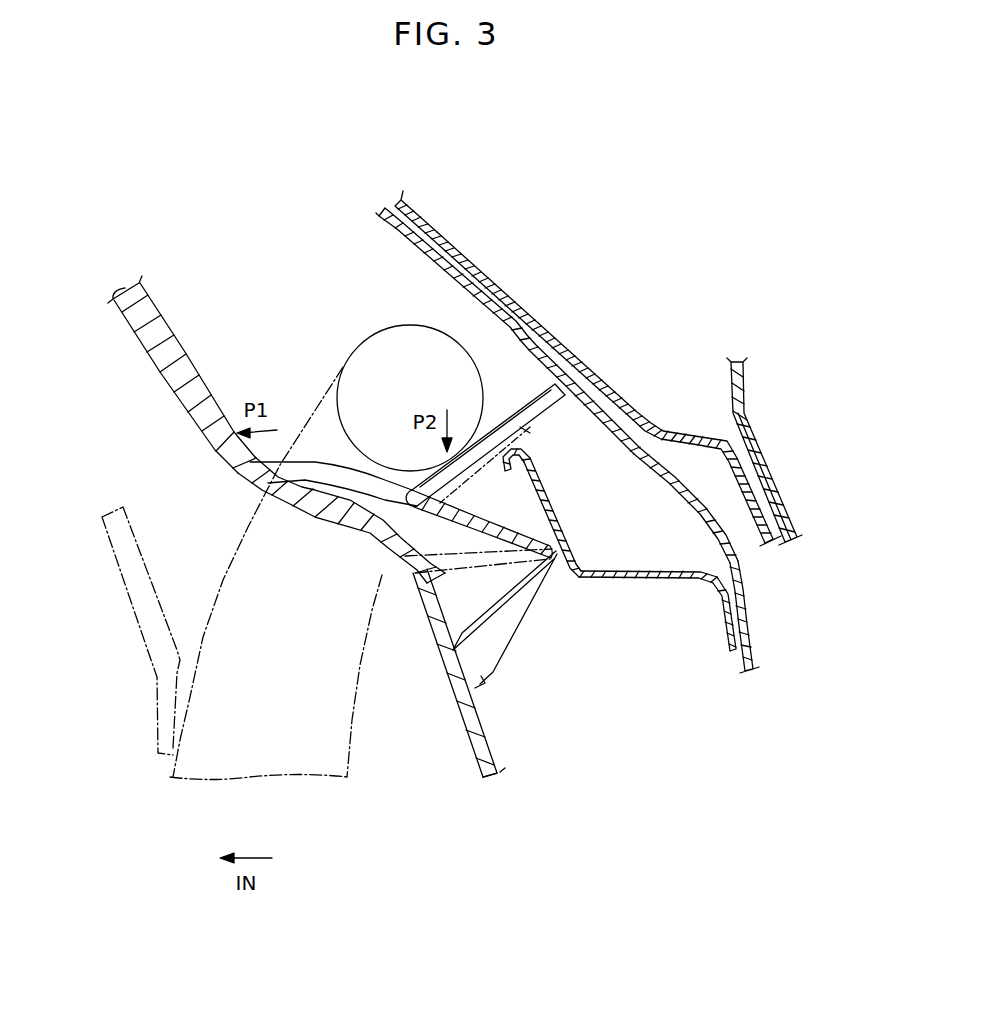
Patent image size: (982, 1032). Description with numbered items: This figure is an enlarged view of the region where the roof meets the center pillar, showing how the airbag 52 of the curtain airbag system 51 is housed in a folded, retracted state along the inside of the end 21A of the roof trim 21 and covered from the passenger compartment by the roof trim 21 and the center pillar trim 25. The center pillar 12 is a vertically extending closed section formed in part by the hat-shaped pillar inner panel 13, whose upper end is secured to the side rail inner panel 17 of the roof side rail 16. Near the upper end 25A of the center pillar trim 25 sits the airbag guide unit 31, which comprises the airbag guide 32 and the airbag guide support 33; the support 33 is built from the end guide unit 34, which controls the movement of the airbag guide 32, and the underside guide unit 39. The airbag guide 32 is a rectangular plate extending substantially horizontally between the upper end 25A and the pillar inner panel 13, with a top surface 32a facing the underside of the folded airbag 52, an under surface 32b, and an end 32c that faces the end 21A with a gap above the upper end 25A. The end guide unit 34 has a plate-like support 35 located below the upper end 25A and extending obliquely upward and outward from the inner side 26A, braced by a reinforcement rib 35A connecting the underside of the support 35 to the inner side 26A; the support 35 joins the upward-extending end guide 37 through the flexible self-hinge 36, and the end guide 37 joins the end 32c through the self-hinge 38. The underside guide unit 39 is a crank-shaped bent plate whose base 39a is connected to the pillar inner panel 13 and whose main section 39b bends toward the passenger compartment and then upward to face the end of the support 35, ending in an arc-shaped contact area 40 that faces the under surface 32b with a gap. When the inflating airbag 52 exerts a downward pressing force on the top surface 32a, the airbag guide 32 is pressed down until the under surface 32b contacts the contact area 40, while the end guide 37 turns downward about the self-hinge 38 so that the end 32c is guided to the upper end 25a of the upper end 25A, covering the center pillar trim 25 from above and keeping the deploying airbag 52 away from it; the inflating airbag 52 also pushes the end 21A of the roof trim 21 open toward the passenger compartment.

The center pillar 12 is at (737, 580).
The pillar inner panel 13 is at (752, 660).
The roof side rail 16 is at (437, 233).
The side rail inner panel 17 is at (470, 268).
The roof trim 21 is at (146, 330).
The end of roof trim 21A is at (352, 528).
The center pillar trim 25 is at (480, 763).
The upper end of center pillar trim 25A is at (430, 627).
The upper end of the upper end of center pillar trim 25a is at (410, 572).
The inner side 26A is at (455, 742).
The airbag guide unit 31 is at (585, 678).
The airbag guide 32 is at (566, 350).
The top surface 32a is at (513, 410).
The under surface 32b is at (567, 390).
The end of airbag guide 32c is at (250, 462).
The airbag guide support 33 is at (597, 650).
The end guide unit 34 is at (518, 628).
The support 35 is at (483, 620).
The reinforcement rib 35A is at (480, 683).
The self-hinge 36 is at (567, 538).
The end guide 37 is at (503, 528).
The self-hinge 38 is at (277, 478).
The underside guide unit 39 is at (613, 580).
The base 39a is at (730, 633).
The main section 39b is at (657, 571).
The contact area 40 is at (530, 455).
The curtain airbag system 51 is at (340, 347).
The airbag 52 is at (397, 328).